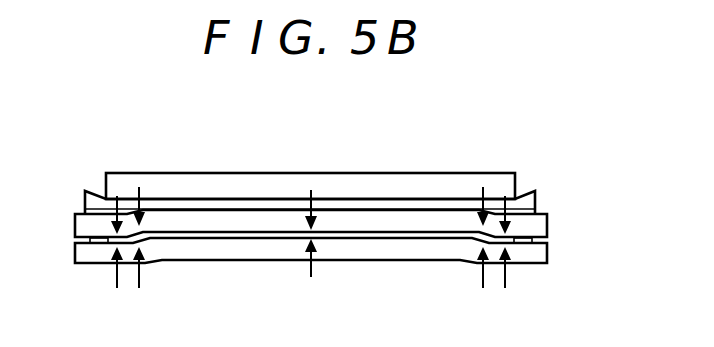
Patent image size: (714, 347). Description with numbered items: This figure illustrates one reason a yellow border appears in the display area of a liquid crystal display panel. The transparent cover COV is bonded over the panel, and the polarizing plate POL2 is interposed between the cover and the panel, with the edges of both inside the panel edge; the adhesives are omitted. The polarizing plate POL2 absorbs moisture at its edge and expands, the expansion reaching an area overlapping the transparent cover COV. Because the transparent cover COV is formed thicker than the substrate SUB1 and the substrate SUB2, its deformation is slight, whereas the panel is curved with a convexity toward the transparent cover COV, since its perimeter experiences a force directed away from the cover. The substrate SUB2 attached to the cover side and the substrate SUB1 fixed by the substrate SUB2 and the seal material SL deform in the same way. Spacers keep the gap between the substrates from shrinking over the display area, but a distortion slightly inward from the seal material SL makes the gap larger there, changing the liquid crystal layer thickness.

The transparent cover COV is at (328, 184).
The polarizing plate POL2 is at (212, 197).
The substrate SUB2 is at (414, 230).
The substrate SUB1 is at (232, 256).
The seal material SL is at (97, 244).